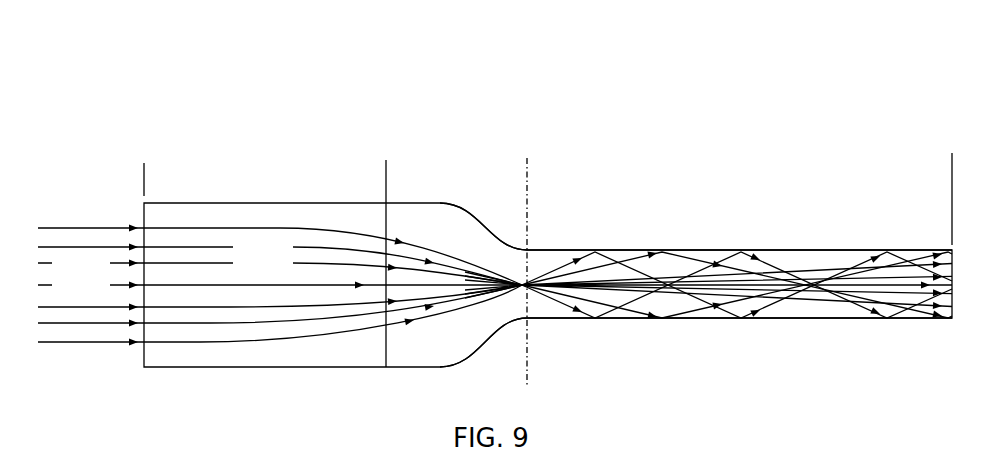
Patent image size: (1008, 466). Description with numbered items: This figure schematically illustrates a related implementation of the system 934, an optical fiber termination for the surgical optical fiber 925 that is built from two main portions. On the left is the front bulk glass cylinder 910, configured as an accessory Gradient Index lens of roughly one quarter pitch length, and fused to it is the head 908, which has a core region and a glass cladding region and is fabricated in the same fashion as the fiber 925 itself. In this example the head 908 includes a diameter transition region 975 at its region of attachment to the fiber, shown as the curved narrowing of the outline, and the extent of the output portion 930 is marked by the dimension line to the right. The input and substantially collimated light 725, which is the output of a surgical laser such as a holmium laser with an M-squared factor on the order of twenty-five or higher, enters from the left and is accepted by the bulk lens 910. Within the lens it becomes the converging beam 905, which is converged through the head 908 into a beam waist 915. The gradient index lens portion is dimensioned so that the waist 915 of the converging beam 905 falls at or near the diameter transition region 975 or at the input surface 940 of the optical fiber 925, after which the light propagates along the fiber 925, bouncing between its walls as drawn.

The input substantially collimated light 725 is at (88, 285).
The converging beam 905 is at (329, 285).
The head 908 is at (527, 182).
The front bulk glass cylinder 910 is at (386, 182).
The beam waist 915 is at (455, 282).
The surgical optical fiber 925 is at (737, 285).
The output waveguide section 930 is at (952, 182).
The system 934 is at (597, 80).
The input surface 940 is at (536, 349).
The transition region 975 is at (500, 232).